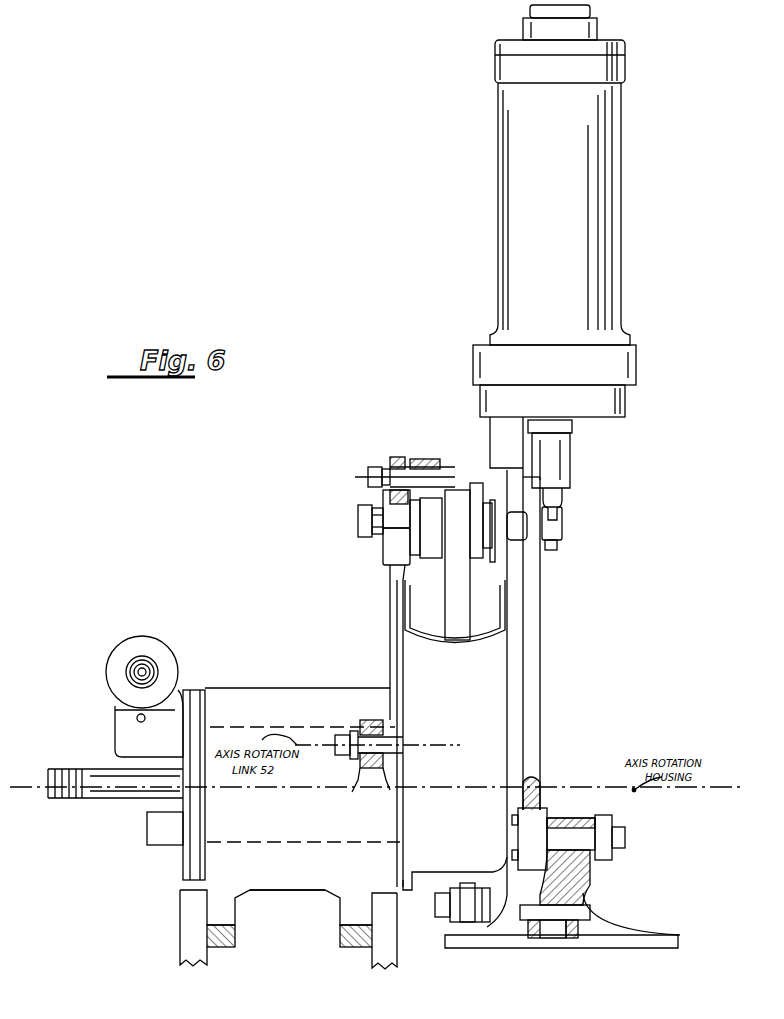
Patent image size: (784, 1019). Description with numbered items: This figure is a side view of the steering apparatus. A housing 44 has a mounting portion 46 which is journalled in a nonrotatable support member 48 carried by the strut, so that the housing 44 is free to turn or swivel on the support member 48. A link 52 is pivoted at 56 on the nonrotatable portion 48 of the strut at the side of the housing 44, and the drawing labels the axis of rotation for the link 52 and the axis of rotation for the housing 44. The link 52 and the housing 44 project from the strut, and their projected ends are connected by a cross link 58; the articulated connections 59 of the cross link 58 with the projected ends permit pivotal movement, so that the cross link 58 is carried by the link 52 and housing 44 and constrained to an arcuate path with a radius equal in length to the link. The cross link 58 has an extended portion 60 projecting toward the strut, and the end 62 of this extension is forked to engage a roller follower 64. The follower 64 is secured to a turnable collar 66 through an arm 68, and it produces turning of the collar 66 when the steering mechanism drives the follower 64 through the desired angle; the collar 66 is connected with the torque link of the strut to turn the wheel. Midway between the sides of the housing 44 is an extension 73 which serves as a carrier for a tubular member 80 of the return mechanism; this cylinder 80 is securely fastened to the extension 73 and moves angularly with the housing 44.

The tubular member 80 is at (515, 165).
The extension 73 is at (500, 430).
The articulated connection 59 is at (372, 474).
The cross link 58 is at (478, 503).
The link 52 is at (393, 603).
The nonrotatable support member 48 is at (310, 697).
The pivot 56 is at (345, 733).
The mounting portion 46 is at (303, 830).
The housing 44 is at (497, 745).
The extended portion 60 is at (535, 656).
The forked end 62 is at (533, 825).
The roller follower 64 is at (513, 860).
The turnable collar 66 is at (665, 935).
The arm 68 is at (590, 878).